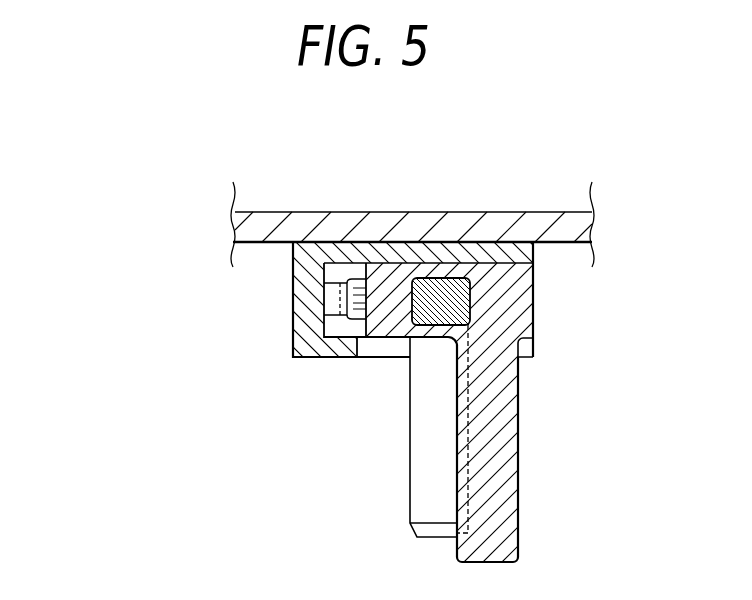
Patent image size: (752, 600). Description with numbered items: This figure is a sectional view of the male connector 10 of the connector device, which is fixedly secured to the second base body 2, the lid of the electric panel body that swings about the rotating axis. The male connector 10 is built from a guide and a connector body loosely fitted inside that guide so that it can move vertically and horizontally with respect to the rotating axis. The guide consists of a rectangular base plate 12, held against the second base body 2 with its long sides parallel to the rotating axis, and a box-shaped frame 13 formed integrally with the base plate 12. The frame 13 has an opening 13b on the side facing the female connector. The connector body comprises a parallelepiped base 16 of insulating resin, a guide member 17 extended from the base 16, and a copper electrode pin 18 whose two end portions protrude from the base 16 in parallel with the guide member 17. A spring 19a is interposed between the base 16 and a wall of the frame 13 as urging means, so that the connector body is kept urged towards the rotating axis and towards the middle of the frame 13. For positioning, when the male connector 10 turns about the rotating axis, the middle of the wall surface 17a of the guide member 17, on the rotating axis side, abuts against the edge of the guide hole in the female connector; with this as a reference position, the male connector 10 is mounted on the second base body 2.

The second base body 2 is at (517, 212).
The male connector 10 is at (86, 299).
The base plate 12 is at (373, 250).
The frame 13 is at (315, 358).
The opening 13b is at (387, 362).
The base 16 is at (500, 302).
The guide member 17 is at (492, 408).
The wall surface 17a is at (518, 513).
The electrode pin 18 is at (428, 473).
The spring 19a is at (332, 297).